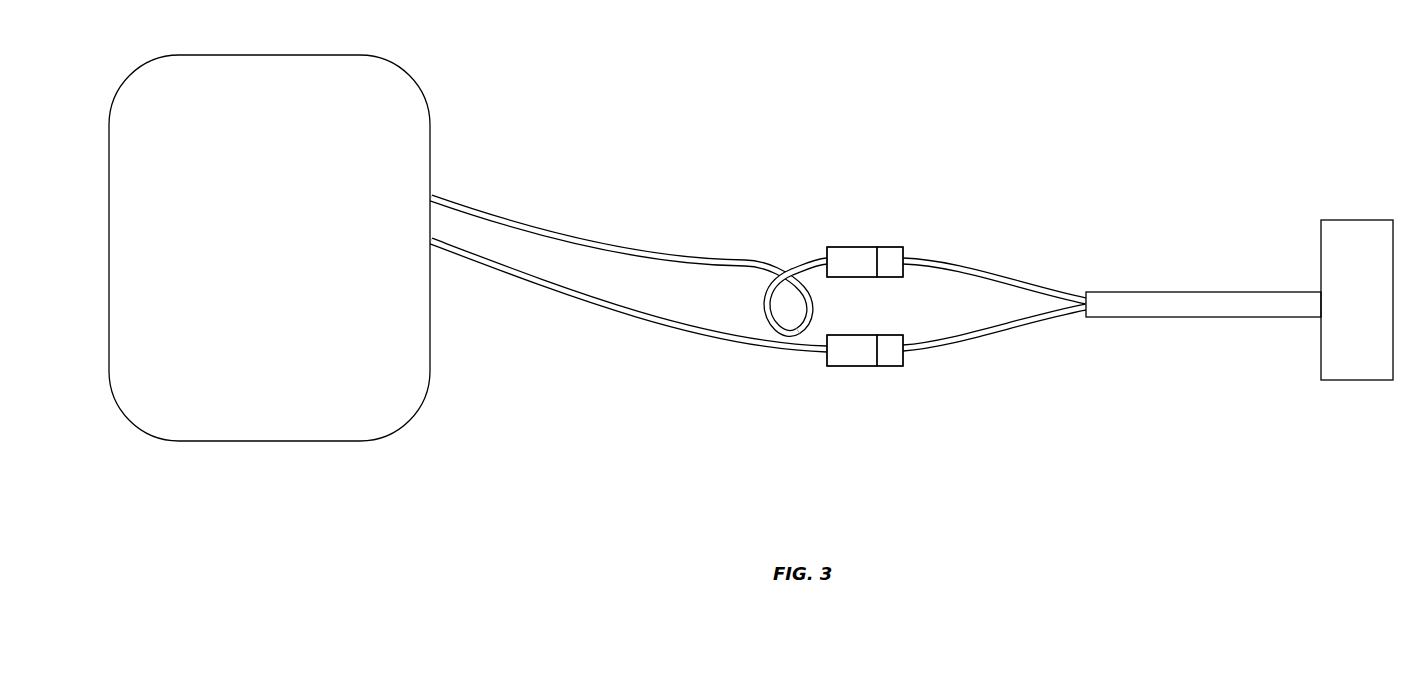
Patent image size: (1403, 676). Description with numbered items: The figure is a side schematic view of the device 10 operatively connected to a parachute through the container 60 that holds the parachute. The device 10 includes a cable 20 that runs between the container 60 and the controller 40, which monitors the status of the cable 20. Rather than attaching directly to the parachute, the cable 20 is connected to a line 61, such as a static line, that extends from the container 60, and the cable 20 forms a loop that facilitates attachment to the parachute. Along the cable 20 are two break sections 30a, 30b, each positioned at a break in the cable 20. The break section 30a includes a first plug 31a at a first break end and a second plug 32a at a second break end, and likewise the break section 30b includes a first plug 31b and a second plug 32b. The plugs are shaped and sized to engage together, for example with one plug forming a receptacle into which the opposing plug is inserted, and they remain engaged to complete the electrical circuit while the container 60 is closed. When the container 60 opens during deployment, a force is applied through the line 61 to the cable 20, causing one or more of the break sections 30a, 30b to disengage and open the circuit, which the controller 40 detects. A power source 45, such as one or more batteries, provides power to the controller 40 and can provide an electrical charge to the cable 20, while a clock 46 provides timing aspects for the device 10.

The device 10 is at (1147, 107).
The cable 20 is at (1013, 285).
The break section 30a is at (861, 255).
The break section 30b is at (890, 360).
The first plug 31a is at (838, 272).
The first plug 31b is at (840, 340).
The second plug 32a is at (888, 268).
The second plug 32b is at (887, 342).
The controller 40 is at (1346, 310).
The power source 45 is at (1175, 343).
The clock 46 is at (968, 373).
The container 60 is at (266, 252).
The line 61 is at (582, 305).